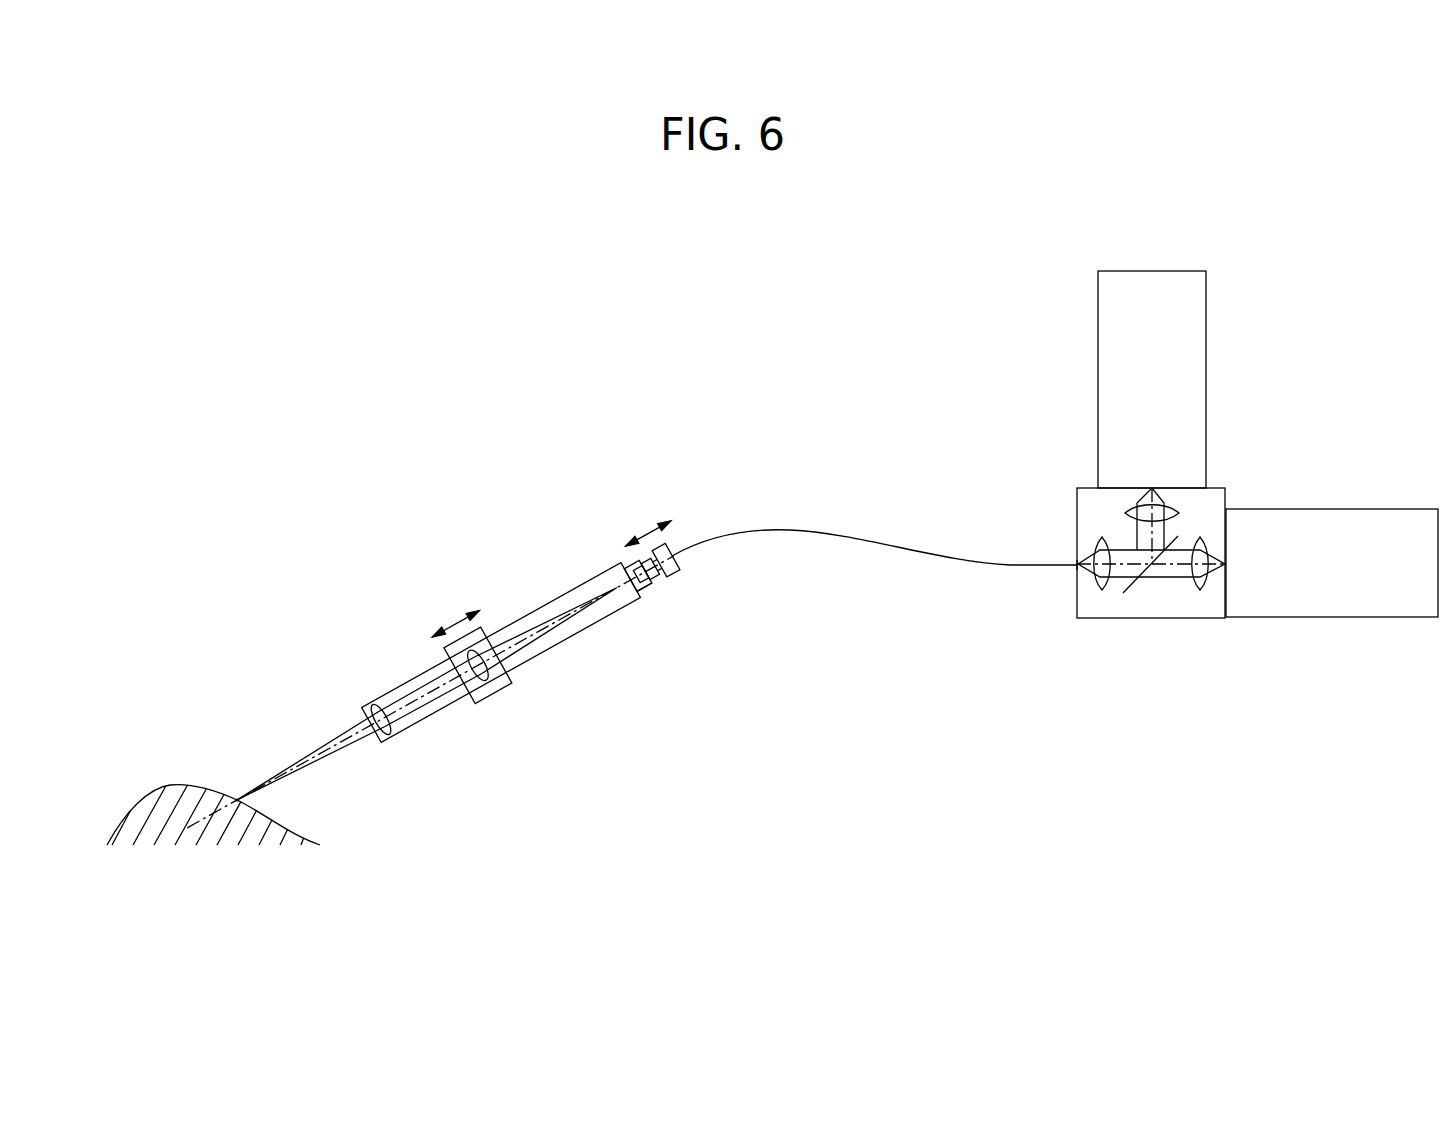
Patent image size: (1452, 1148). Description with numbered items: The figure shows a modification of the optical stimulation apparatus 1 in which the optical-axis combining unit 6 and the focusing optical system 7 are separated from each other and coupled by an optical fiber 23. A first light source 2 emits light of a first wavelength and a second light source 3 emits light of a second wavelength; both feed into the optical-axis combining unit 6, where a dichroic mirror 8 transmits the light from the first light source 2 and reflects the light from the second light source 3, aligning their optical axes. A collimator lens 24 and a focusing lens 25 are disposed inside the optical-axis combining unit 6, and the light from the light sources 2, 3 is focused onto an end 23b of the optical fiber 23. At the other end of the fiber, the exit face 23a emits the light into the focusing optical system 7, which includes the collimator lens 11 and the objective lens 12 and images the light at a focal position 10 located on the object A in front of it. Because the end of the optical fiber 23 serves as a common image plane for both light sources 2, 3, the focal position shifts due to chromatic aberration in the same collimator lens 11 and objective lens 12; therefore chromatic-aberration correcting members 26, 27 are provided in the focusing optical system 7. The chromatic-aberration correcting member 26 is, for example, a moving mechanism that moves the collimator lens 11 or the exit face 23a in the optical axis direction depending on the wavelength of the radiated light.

The optical measuring apparatus 1 is at (968, 273).
The first light source 2 is at (1206, 326).
The second light source 3 is at (1364, 509).
The optical-axis combining unit 6 is at (1093, 620).
The focusing optical system 7 is at (522, 574).
The dichroic mirror 8 is at (1124, 594).
The focal position 10 is at (237, 797).
The collimator lens 11 is at (482, 692).
The objective lens 12 is at (386, 738).
The optical fiber 23 is at (935, 552).
The exit face 23a is at (645, 596).
The end of the optical fiber 23b is at (1076, 588).
The collimator lens 24 is at (1190, 510).
The focusing lens 25 is at (1093, 543).
The chromatic-aberration correcting member 26 is at (514, 688).
The chromatic-aberration correcting member 27 is at (667, 548).
The object to be measured A is at (178, 785).